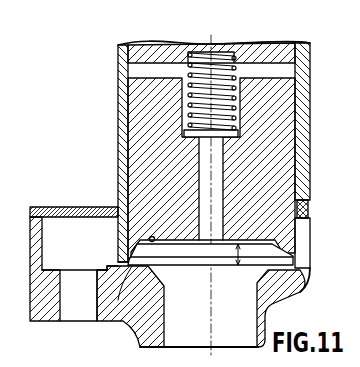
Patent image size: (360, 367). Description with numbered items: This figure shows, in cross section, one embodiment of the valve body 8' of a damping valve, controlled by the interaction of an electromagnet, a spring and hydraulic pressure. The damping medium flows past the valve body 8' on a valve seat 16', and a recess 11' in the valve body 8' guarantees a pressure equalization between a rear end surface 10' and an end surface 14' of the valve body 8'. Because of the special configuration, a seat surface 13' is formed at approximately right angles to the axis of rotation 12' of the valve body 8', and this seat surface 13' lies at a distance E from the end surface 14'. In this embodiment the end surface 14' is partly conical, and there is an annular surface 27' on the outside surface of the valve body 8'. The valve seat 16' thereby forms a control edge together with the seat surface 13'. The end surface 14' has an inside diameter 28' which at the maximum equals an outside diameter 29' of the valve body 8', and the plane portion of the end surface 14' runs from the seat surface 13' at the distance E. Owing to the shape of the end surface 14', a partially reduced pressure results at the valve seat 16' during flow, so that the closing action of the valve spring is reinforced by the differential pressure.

The rear end surface 10' is at (163, 71).
The valve body 8' is at (196, 148).
The recess 11' is at (164, 107).
The axis of rotation 12' is at (146, 170).
The end surface 14' is at (108, 195).
The annular surface 27' is at (74, 237).
The seat surface 13' is at (74, 195).
The outside diameter 29' is at (235, 154).
The valve seat 16' is at (233, 279).
The inside diameter 28' is at (185, 311).
The distance E is at (238, 265).